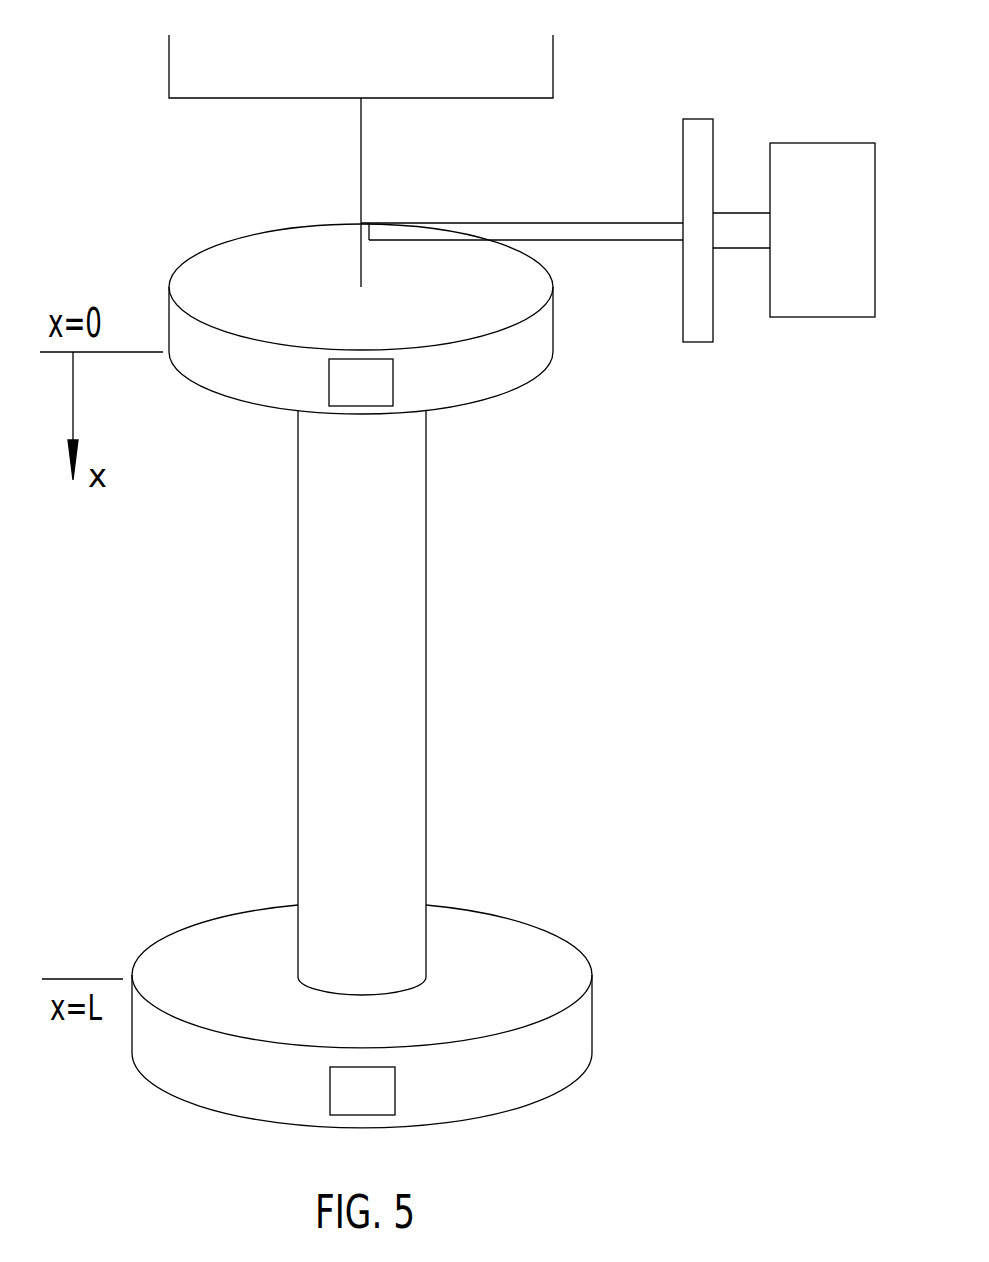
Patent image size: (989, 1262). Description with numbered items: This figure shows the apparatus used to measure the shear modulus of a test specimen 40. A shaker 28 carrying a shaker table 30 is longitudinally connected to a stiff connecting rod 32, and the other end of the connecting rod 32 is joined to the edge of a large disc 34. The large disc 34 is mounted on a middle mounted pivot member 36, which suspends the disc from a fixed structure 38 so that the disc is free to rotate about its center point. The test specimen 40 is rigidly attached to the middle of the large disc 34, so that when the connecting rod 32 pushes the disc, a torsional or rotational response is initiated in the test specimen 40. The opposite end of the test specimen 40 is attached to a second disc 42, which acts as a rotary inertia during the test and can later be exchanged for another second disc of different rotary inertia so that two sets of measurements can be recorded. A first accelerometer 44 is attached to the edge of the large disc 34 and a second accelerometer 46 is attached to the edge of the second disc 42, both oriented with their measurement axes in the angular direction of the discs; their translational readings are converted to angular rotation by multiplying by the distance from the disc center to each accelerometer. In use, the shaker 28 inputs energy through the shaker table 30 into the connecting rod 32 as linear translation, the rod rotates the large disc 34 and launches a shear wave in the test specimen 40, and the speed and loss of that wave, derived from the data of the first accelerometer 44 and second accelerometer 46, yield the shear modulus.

The shaker 28 is at (826, 278).
The shaker table 30 is at (697, 135).
The connecting rod 32 is at (560, 232).
The large disc 34 is at (530, 350).
The pivot member 36 is at (361, 176).
The fixed structure 38 is at (400, 65).
The test specimen 40 is at (378, 702).
The second disc 42 is at (547, 1052).
The first accelerometer 44 is at (362, 383).
The second accelerometer 46 is at (370, 1091).